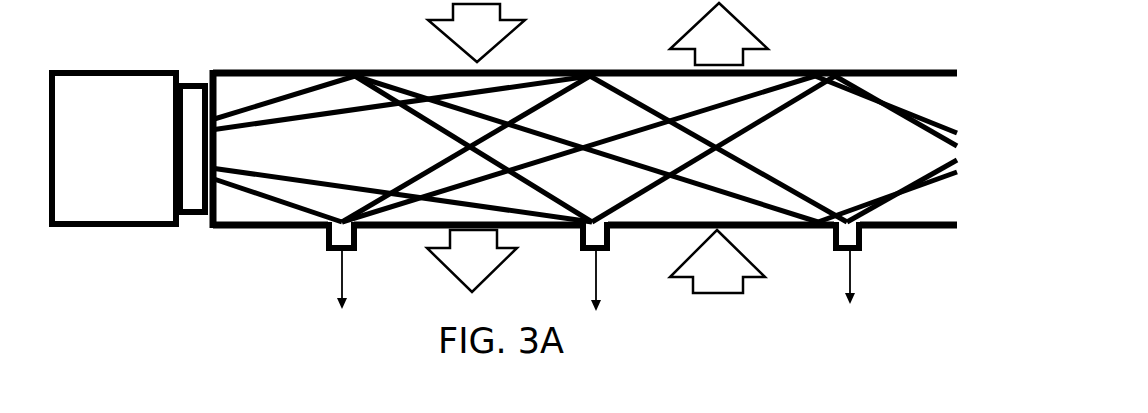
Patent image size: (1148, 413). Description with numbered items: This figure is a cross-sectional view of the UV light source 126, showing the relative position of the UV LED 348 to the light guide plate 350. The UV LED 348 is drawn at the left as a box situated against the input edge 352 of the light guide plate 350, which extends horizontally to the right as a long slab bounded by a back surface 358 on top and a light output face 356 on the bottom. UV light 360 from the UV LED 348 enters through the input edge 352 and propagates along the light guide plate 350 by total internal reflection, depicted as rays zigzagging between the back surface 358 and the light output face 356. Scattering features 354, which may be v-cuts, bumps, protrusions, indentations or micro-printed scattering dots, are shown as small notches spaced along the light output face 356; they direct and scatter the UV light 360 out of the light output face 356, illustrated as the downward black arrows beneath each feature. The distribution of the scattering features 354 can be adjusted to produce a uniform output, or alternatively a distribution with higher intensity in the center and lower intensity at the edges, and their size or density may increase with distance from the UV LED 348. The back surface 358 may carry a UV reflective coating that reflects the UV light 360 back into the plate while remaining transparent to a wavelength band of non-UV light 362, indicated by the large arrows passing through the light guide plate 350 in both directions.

The UV light source 126 is at (108, 43).
The UV LED 348 is at (130, 158).
The light guide plate 350 is at (216, 147).
The input edge 352 is at (167, 127).
The scattering features 354 is at (556, 254).
The light output face 356 is at (564, 256).
The back surface 358 is at (585, 53).
The UV light 360 is at (554, 281).
The non-UV light 362 is at (493, 43).